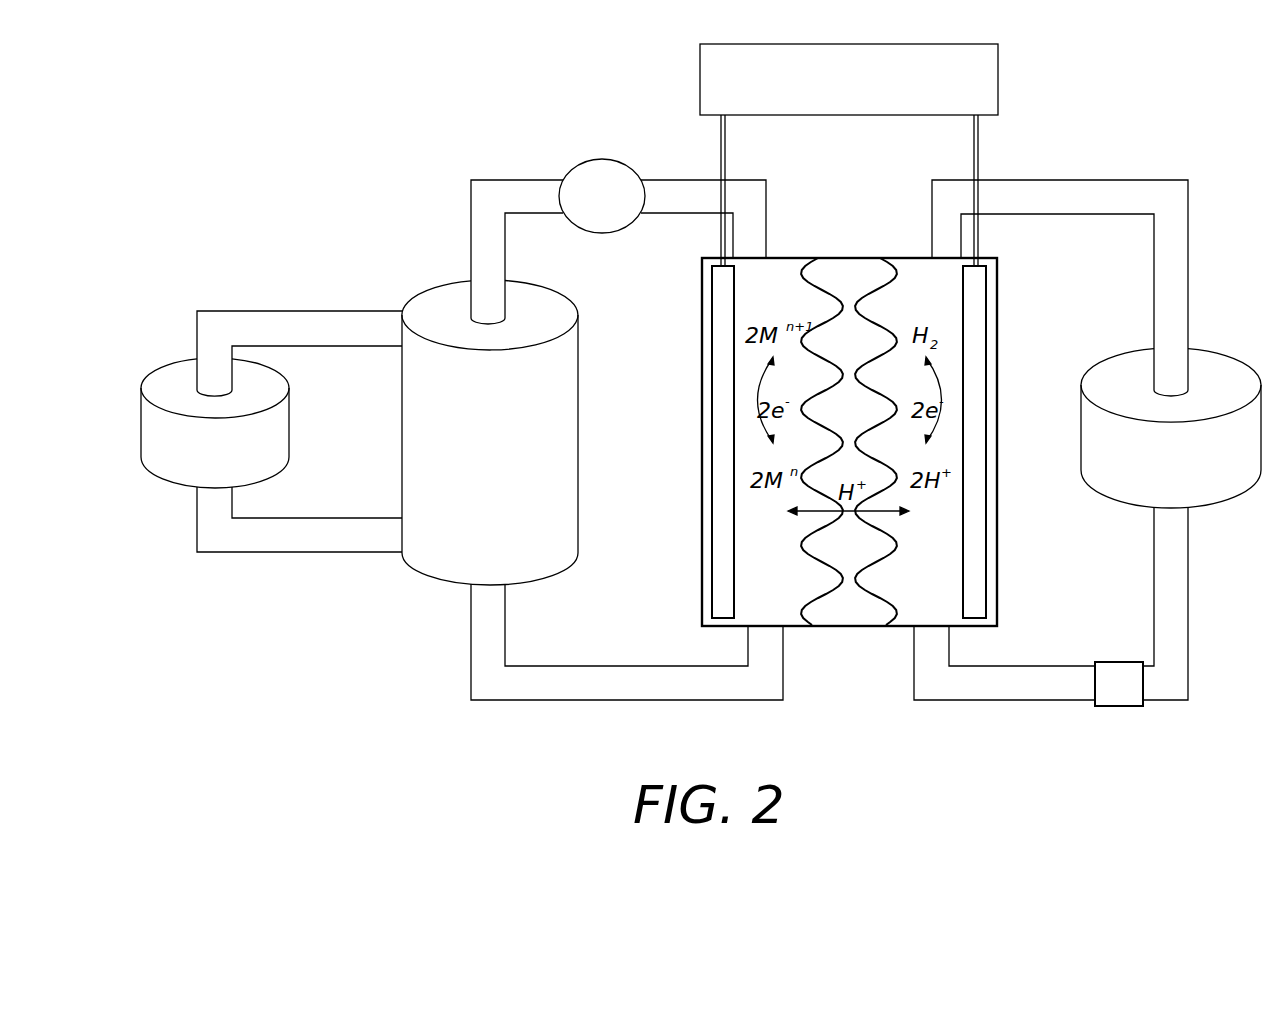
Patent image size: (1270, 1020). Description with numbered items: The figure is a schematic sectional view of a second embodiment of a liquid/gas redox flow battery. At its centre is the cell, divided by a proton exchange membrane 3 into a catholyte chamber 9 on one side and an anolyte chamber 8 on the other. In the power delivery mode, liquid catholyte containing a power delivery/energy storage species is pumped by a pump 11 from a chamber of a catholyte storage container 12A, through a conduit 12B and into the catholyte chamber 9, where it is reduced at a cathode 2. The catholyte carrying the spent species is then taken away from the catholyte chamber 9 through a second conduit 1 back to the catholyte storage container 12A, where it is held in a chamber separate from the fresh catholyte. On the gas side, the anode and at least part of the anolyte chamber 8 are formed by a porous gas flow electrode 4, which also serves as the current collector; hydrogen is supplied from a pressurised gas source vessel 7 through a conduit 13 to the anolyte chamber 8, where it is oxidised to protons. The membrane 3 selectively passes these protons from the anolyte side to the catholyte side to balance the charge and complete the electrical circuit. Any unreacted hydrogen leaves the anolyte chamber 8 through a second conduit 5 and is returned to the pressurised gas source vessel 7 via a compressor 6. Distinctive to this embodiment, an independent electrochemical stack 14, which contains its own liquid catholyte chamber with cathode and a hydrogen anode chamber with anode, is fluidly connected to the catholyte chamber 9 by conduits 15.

The second conduit 1 is at (633, 690).
The cathode 2 is at (720, 440).
The proton exchange membrane 3 is at (852, 618).
The porous gas flow electrode 4 is at (977, 442).
The second conduit 5 is at (1023, 690).
The compressor 6 is at (1111, 697).
The pressurised gas source vessel 7 is at (1163, 478).
The anolyte chamber 8 is at (935, 270).
The catholyte chamber 9 is at (765, 270).
The pump 11 is at (589, 209).
The catholyte storage container 12A is at (470, 467).
The conduit 12B is at (542, 188).
The conduit 13 is at (1072, 188).
The electrochemical stack 14 is at (201, 463).
The conduits 15 is at (305, 543).